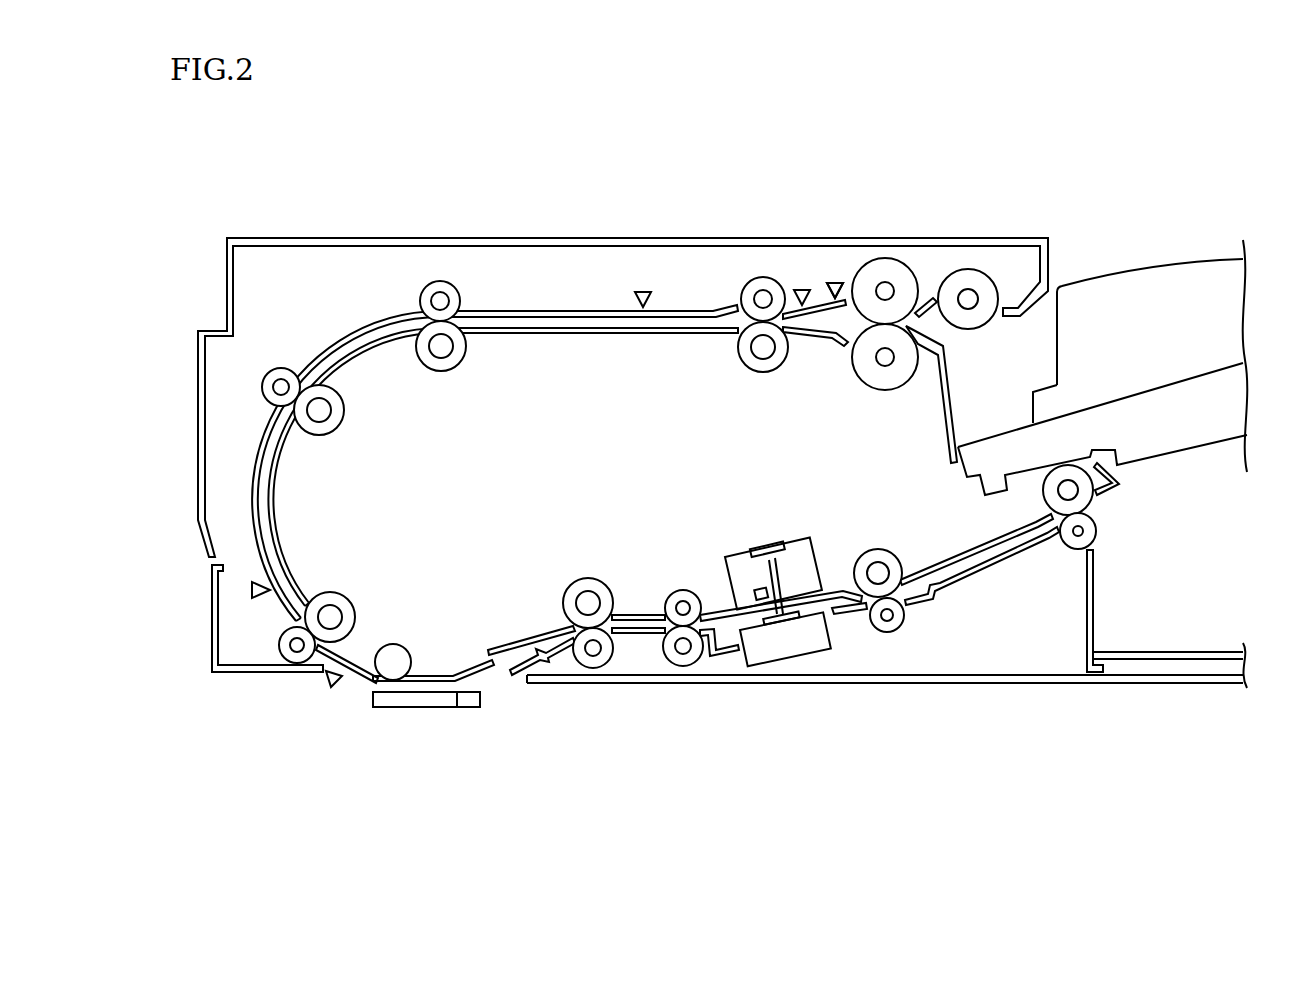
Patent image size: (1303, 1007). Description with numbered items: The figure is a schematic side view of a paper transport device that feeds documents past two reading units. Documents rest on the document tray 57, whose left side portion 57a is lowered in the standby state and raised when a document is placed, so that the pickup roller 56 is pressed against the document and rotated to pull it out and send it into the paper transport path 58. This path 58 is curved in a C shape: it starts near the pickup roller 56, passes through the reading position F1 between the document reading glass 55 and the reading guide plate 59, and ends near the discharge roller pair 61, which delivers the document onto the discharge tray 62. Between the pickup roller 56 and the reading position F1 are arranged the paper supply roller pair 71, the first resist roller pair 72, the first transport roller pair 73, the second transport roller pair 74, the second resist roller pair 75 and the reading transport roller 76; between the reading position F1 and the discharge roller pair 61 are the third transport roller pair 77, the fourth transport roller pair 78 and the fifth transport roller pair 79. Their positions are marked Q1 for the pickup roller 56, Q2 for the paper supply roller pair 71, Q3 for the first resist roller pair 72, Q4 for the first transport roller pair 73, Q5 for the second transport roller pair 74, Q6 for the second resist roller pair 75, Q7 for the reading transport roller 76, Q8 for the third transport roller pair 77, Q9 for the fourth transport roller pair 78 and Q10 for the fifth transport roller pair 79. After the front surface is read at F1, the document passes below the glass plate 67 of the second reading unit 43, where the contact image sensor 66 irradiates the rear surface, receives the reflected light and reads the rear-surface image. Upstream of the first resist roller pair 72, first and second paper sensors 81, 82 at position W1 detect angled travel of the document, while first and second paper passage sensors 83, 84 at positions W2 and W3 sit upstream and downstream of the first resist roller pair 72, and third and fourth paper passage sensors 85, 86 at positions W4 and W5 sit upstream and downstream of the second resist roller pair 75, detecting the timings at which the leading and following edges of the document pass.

The second reading unit 43 is at (798, 540).
The document reading glass 55 is at (460, 708).
The pickup roller 56 is at (970, 280).
The document tray 57 is at (1150, 390).
The left side portion 57a is at (975, 443).
The paper transport path 58 is at (258, 462).
The reading guide plate 59 is at (447, 672).
The discharge roller pair 61 is at (1097, 531).
The discharge tray 62 is at (1200, 652).
The contact image sensor 66 is at (757, 572).
The glass plate 67 is at (790, 645).
The paper supply roller pair 71 is at (887, 266).
The first resist roller pair 72 is at (750, 286).
The first transport roller pair 73 is at (441, 283).
The second transport roller pair 74 is at (268, 384).
The second resist roller pair 75 is at (287, 656).
The reading transport roller 76 is at (397, 644).
The third transport roller pair 77 is at (594, 669).
The fourth transport roller pair 78 is at (683, 667).
The fifth transport roller pair 79 is at (888, 633).
The first paper sensor 81 is at (835, 283).
The second paper sensor 82 is at (835, 290).
The first paper passage sensor 83 is at (801, 290).
The second paper passage sensor 84 is at (643, 292).
The third paper passage sensor 85 is at (252, 590).
The fourth paper passage sensor 86 is at (333, 688).
The position of the pickup roller Q1 is at (974, 338).
The position of the paper supply roller pair Q2 is at (890, 394).
The position of the first resist roller pair Q3 is at (759, 374).
The position of the first transport roller pair Q4 is at (451, 373).
The position of the second transport roller pair Q5 is at (347, 433).
The position of the second resist roller pair Q6 is at (348, 581).
The position of the reading transport roller Q7 is at (380, 712).
The position of the third transport roller pair Q8 is at (589, 576).
The position of the fourth transport roller pair Q9 is at (682, 588).
The position of the fifth transport roller pair Q10 is at (874, 546).
The position of the first and second paper sensors W1 is at (837, 351).
The position of the first paper passage sensor W2 is at (804, 346).
The position of the second paper passage sensor W3 is at (643, 346).
The position of the third paper passage sensor W4 is at (298, 580).
The position of the fourth paper passage sensor W5 is at (350, 656).
The reading position F1 is at (420, 710).